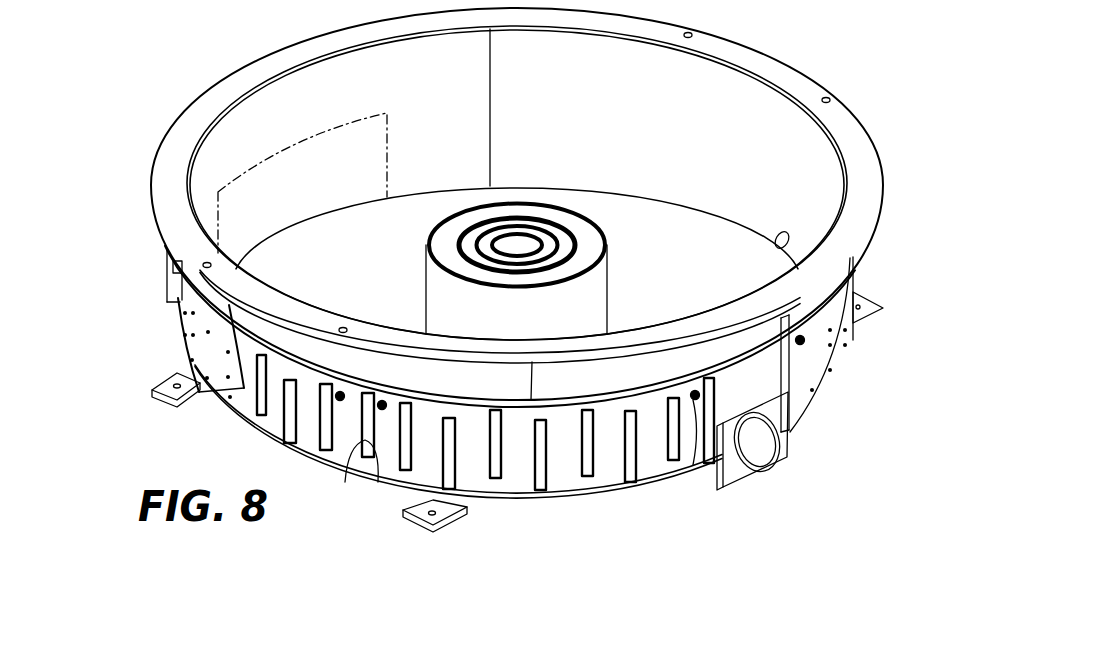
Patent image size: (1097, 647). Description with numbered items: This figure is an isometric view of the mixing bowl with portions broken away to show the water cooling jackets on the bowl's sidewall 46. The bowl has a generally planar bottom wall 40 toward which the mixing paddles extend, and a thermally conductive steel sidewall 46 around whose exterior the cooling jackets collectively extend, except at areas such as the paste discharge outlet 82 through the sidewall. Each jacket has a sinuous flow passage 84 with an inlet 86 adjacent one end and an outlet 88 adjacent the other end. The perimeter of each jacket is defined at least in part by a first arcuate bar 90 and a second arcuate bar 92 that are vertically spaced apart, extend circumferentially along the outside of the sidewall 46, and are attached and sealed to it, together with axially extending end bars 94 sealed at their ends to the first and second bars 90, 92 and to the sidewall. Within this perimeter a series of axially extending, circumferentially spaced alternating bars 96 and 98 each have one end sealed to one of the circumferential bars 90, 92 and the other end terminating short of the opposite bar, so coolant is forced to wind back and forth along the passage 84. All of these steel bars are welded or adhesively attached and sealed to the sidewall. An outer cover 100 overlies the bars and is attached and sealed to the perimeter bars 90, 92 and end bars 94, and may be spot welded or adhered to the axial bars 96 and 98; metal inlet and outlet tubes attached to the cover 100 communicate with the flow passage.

The bottom wall 40 is at (698, 267).
The sidewall 46 is at (655, 131).
The paste discharge outlet 82 is at (374, 147).
The sinuous flow passage 84 is at (601, 477).
The inlet 86 is at (342, 392).
The outlet 88 is at (193, 300).
The first arcuate bar 90 is at (532, 362).
The second arcuate bar 92 is at (517, 494).
The end bar 94 is at (360, 438).
The alternating bar 96 is at (226, 383).
The alternating bar 98 is at (282, 400).
The outer cover 100 is at (210, 355).